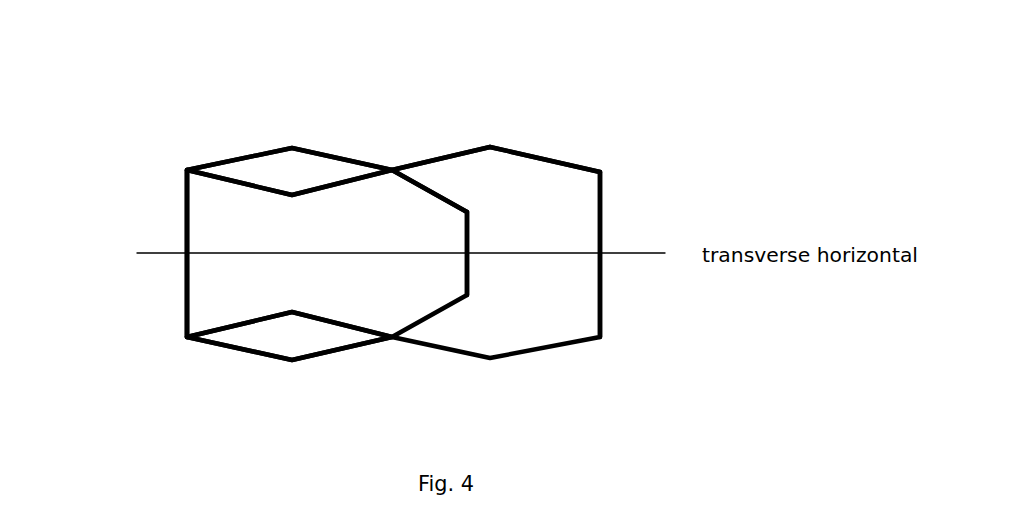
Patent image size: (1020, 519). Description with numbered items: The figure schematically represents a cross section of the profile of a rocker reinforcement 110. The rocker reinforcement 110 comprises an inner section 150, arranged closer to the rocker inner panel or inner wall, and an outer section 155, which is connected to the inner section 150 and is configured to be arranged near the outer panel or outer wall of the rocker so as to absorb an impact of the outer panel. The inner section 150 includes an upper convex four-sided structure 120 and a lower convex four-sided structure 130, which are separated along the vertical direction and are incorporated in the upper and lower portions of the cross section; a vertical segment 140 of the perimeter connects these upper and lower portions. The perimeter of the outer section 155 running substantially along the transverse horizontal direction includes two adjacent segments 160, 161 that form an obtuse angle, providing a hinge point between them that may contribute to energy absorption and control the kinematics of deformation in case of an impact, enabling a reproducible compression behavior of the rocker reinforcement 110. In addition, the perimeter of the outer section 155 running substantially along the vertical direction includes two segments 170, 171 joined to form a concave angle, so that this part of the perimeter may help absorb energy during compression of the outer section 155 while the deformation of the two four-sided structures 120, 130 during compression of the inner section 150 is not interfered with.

The rocker reinforcement 110 is at (391, 380).
The upper convex four-sided structure 120 is at (236, 144).
The lower convex four-sided structure 130 is at (220, 356).
The vertical segment 140 is at (187, 272).
The inner section 150 is at (164, 225).
The outer section 155 is at (620, 323).
The segment 160 is at (443, 157).
The segment 161 is at (562, 163).
The segment 170 is at (427, 195).
The segment 171 is at (470, 230).